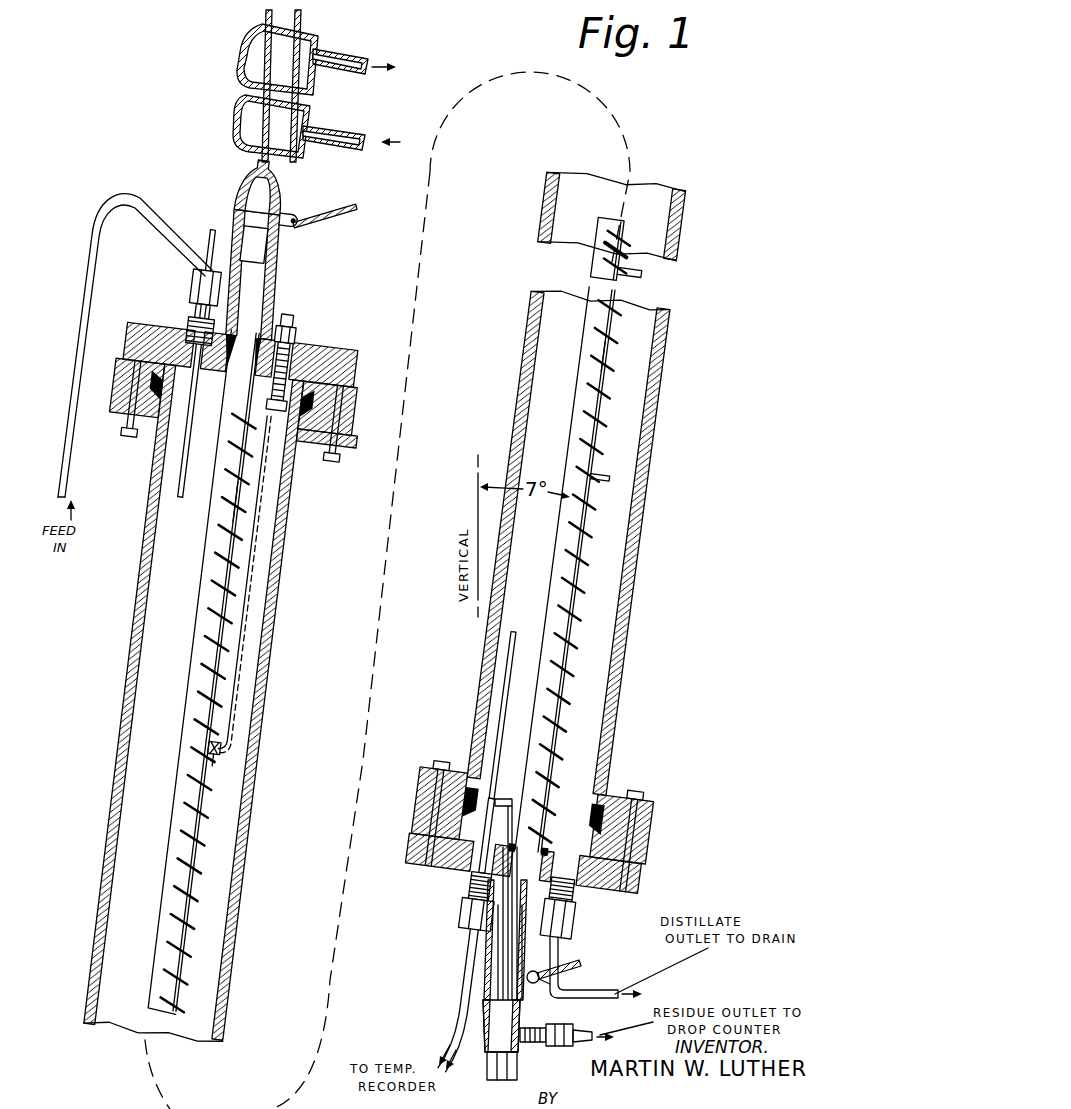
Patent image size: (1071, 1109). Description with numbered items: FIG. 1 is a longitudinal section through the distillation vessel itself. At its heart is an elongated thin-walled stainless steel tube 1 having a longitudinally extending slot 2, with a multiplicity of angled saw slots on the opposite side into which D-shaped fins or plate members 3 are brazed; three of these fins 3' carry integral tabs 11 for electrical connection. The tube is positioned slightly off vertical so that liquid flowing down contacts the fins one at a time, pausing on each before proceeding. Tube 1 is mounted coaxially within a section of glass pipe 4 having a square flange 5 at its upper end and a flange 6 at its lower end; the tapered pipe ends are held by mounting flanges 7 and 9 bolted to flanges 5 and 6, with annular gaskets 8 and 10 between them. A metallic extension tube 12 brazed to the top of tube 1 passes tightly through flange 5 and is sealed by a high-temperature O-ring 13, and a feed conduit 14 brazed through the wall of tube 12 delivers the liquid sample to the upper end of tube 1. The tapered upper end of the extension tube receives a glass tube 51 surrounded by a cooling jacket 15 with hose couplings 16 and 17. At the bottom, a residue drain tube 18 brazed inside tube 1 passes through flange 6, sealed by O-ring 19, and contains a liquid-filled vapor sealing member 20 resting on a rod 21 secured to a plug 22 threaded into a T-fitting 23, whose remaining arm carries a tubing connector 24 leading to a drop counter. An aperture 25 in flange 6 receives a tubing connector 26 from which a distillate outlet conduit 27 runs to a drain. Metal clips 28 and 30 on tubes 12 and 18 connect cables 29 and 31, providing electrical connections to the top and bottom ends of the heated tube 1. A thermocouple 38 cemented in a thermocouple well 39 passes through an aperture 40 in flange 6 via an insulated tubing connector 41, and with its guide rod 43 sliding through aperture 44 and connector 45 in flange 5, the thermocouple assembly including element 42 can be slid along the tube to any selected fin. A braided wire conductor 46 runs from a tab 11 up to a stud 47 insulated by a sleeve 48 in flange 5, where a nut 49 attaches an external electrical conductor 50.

The stainless steel tube 1 is at (235, 495).
The slot 2 is at (225, 393).
The fin or plate member 3 is at (407, 622).
The tabbed fin 3' is at (382, 475).
The glass pipe section 4 is at (283, 570).
The upper flange 5 is at (352, 373).
The lower flange 6 is at (412, 857).
The upper mounting flange 7 is at (346, 452).
The annular gasket 8 is at (326, 403).
The lower mounting flange 9 is at (420, 774).
The annular gasket 10 is at (455, 825).
The tab 11 is at (428, 530).
The extension or coupling tube 12 is at (283, 247).
The O-ring 13 is at (170, 379).
The feed conduit 14 is at (90, 266).
The glass jacket 15 is at (238, 119).
The upper hose coupling 16 is at (364, 60).
The lower hose coupling 17 is at (350, 150).
The residue drain tube 18 is at (524, 957).
The O-ring 19 is at (512, 884).
The sealing member 20 is at (517, 927).
The rod 21 is at (518, 983).
The plug 22 is at (500, 1081).
The T-fitting 23 is at (484, 1050).
The tubing connector 24 is at (556, 1046).
The aperture 25 is at (598, 851).
The tubing connector 26 is at (574, 921).
The distillate outlet conduit 27 is at (559, 990).
The metal clip 28 is at (305, 232).
The electrical cable 29 is at (357, 213).
The metal clip 30 is at (535, 984).
The electrical cable 31 is at (575, 963).
The thermocouple 38 is at (513, 803).
The thermocouple well 39 is at (494, 797).
The aperture 40 is at (472, 880).
The tubing connector 41 is at (462, 914).
The thermocouple assembly element 42 is at (452, 1038).
The guide rod 43 is at (213, 238).
The aperture 44 is at (190, 335).
The tubing connector 45 is at (197, 300).
The braided wire conductor 46 is at (245, 645).
The stud 47 is at (284, 404).
The insulating sleeve 48 is at (290, 340).
The nut 49 is at (295, 325).
The electrical conductor 50 is at (292, 334).
The glass tube 51 is at (264, 22).